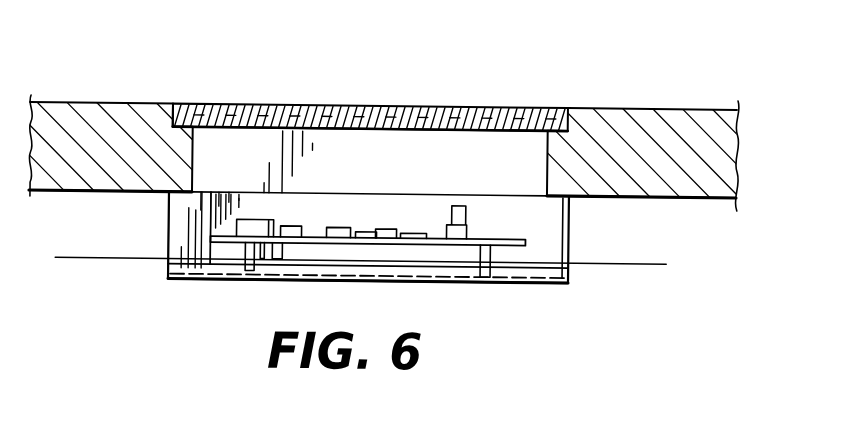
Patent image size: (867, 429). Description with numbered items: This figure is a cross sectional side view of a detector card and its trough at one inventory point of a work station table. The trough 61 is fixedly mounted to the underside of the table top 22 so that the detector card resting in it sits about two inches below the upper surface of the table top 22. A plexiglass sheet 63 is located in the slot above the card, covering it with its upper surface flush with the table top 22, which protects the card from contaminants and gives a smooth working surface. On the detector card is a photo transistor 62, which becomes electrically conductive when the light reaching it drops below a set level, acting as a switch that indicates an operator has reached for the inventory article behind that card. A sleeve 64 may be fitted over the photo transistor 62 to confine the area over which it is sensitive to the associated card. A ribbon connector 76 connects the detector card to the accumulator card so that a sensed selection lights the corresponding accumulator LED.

The table top 22 is at (623, 123).
The plexiglass sheet 63 is at (402, 121).
The photo transistor 62 is at (467, 225).
The trough 61 is at (185, 220).
The sleeve 64 is at (470, 203).
The ribbon connector 76 is at (150, 261).